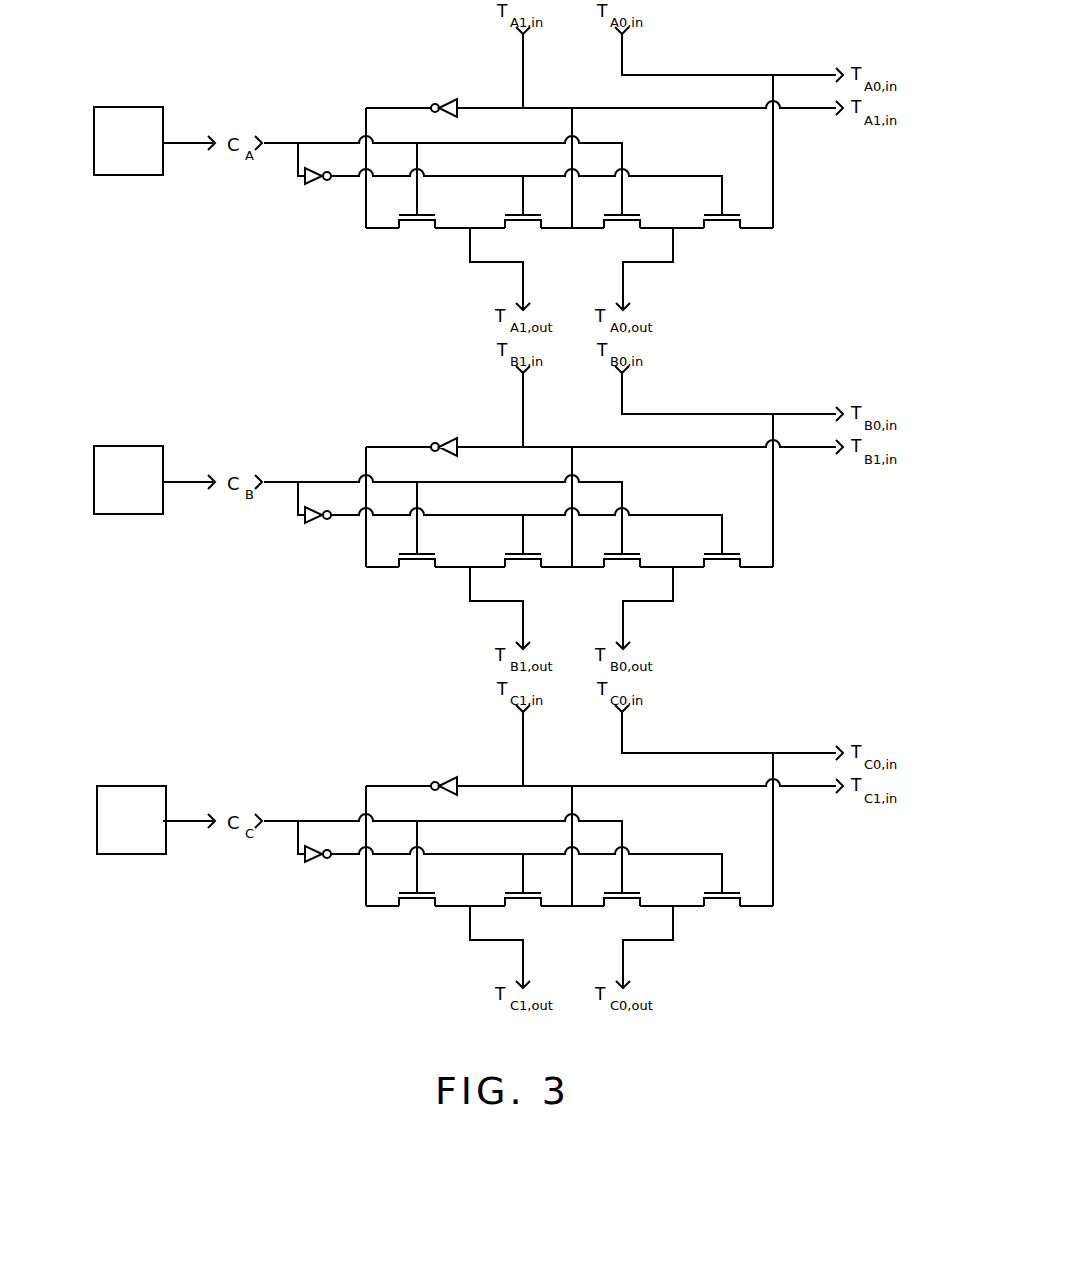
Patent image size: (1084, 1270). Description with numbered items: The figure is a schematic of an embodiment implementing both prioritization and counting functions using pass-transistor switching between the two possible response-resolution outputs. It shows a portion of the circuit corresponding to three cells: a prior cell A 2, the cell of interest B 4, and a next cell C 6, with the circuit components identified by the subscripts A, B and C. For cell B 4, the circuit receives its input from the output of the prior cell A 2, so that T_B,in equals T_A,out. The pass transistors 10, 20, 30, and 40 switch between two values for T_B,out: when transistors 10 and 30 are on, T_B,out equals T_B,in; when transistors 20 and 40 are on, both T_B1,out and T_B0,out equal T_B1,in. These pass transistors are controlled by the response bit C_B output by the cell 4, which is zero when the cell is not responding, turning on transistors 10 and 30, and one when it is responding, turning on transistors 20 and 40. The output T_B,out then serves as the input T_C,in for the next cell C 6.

The prior cell A 2 is at (126, 182).
The cell of interest B 4 is at (126, 521).
The next cell C 6 is at (126, 860).
The pass transistor 10 is at (727, 573).
The pass transistor 20 is at (628, 574).
The pass transistor 30 is at (518, 572).
The pass transistor 40 is at (415, 572).